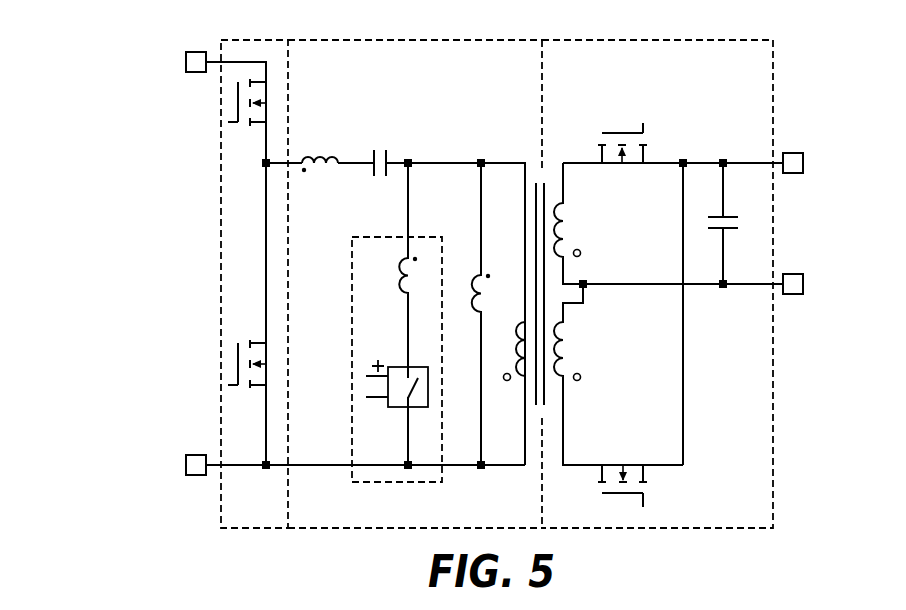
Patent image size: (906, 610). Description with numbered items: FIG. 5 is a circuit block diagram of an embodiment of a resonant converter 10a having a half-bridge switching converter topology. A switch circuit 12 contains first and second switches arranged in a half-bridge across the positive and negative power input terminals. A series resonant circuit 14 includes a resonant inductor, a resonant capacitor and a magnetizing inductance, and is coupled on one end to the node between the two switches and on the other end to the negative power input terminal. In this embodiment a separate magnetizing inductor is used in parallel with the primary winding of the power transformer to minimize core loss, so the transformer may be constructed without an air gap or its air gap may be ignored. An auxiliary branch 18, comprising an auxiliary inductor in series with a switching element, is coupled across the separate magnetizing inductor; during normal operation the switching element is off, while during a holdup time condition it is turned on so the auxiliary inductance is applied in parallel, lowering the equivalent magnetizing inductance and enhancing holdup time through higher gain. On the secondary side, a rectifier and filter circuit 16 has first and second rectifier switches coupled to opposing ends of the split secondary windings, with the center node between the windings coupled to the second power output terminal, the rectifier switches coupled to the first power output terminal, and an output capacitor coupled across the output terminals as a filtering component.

The resonant converter 10a is at (99, 55).
The switch circuit 12 is at (248, 40).
The series resonant circuit 14 is at (455, 40).
The rectifier and filter circuit 16 is at (634, 40).
The auxiliary branch 18 is at (405, 483).